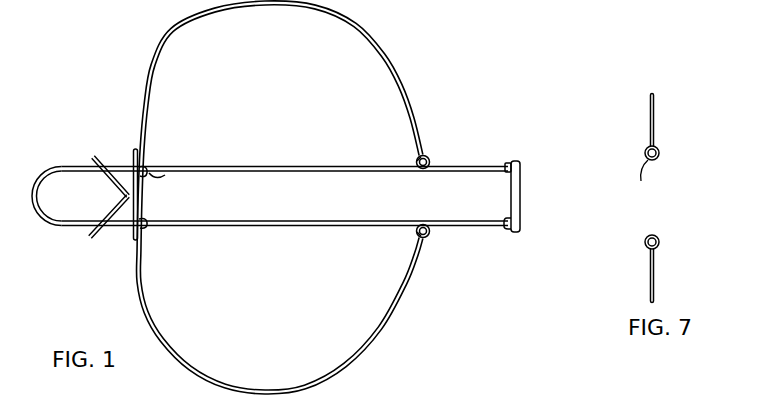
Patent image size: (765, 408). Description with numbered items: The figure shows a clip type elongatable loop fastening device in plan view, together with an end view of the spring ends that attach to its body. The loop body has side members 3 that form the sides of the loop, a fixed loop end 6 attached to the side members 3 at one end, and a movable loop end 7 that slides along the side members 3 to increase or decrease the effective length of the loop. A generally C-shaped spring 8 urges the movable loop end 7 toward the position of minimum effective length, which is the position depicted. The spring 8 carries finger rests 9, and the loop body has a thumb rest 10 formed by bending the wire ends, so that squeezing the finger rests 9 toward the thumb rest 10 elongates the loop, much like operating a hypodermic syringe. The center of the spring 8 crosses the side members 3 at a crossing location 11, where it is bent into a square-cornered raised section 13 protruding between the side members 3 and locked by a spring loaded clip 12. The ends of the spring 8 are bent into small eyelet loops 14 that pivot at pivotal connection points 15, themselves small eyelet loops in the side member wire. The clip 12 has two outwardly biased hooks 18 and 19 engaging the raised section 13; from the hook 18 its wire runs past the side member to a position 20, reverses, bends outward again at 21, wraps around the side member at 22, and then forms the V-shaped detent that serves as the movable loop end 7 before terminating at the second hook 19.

In FIG. 1, the side members 3 is at (281, 172).
In FIG. 1, the fixed loop end 6 is at (42, 204).
In FIG. 1, the movable loop end 7 is at (124, 195).
In FIG. 1, the C-shaped spring 8 is at (384, 63).
In FIG. 1, the finger rests 9 is at (137, 124).
In FIG. 1, the thumb rest 10 is at (523, 198).
In FIG. 1, the crossing location 11 is at (145, 166).
In FIG. 1, the spring loaded clip 12 is at (131, 237).
In FIG. 1, the raised section 13 is at (147, 195).
In FIG. 1, the eyelet loops 14 is at (428, 154).
In FIG. 7, the eyelet loops 14 is at (647, 234).
In FIG. 1, the pivotal connection points 15 is at (417, 161).
In FIG. 1, the hook 18 is at (165, 175).
In FIG. 1, the second hook 19 is at (167, 223).
In FIG. 1, the position outboard of the side member 20 is at (134, 150).
In FIG. 1, the outward bend 21 is at (126, 172).
In FIG. 1, the bend around the side member 22 is at (93, 160).